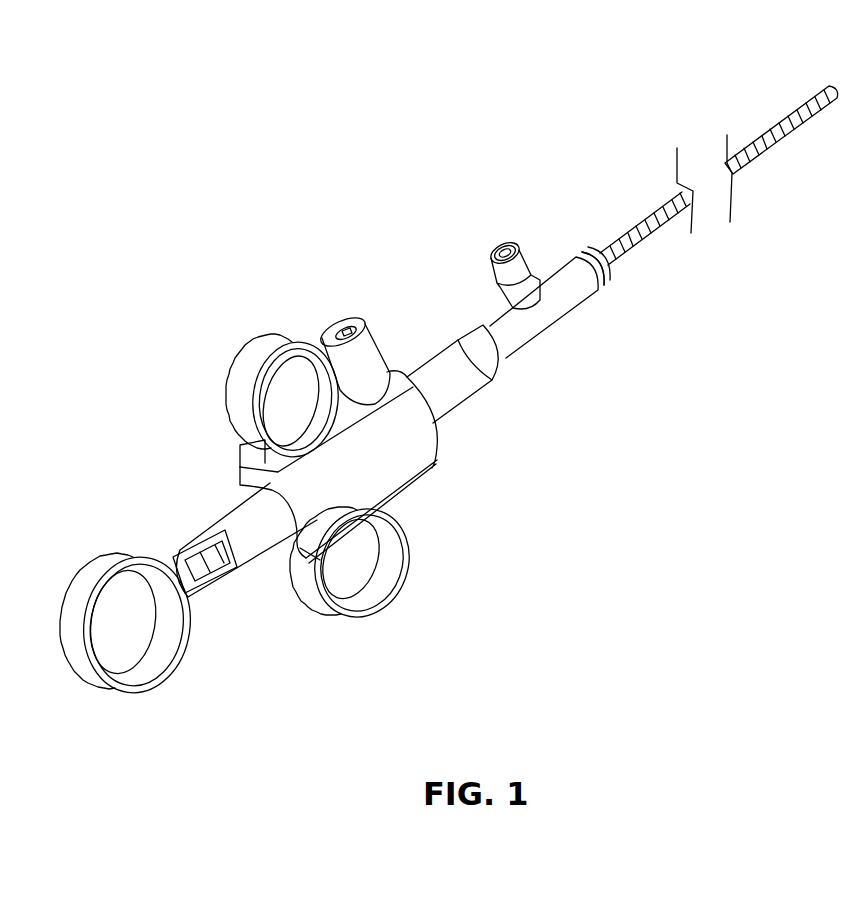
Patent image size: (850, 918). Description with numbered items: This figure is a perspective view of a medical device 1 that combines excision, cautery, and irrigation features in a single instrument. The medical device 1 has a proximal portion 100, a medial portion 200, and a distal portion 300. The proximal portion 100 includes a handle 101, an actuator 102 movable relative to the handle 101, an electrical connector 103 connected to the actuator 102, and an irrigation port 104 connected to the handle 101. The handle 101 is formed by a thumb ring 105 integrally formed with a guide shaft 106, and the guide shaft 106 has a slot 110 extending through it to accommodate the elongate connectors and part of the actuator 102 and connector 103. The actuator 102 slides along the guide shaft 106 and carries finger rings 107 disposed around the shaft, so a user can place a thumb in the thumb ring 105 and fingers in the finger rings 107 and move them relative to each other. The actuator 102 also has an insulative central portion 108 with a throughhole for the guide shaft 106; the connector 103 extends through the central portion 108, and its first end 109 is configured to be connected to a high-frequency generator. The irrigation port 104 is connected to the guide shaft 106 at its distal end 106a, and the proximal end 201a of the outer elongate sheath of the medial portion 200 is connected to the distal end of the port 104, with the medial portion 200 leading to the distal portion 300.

The medical device 1 is at (708, 560).
The proximal portion 100 is at (197, 345).
The handle 101 is at (144, 513).
The actuator 102 is at (460, 558).
The electrical connector 103 is at (355, 338).
The irrigation port 104 is at (513, 223).
The thumb ring 105 is at (70, 578).
The guide shaft 106 is at (452, 387).
The distal end of guide shaft 106a is at (487, 373).
The finger rings 107 is at (258, 362).
The central portion 108 is at (431, 458).
The first end 109 is at (350, 326).
The slot 110 is at (233, 510).
The medial portion 200 is at (744, 237).
The proximal end of outer elongate member 201a is at (612, 268).
The distal portion 300 is at (812, 80).